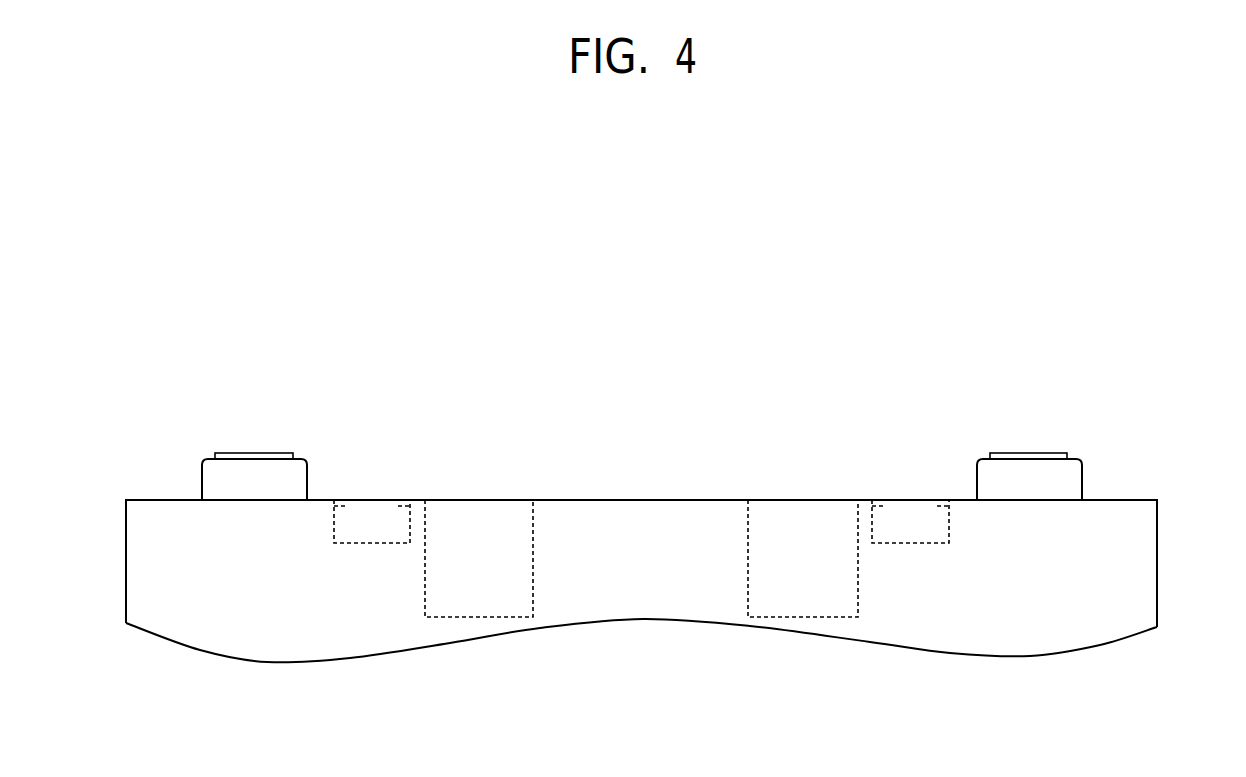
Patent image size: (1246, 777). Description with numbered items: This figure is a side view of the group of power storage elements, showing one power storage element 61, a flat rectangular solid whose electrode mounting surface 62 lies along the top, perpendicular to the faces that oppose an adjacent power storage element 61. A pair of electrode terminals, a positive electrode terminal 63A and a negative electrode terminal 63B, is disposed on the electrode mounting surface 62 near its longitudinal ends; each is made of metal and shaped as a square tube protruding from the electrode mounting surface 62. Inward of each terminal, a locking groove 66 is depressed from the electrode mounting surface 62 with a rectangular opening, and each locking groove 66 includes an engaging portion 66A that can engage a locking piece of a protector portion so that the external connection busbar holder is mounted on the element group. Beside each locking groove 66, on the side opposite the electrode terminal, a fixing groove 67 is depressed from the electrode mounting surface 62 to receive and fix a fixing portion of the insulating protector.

The power storage element 61 is at (1133, 562).
The electrode mounting surface 62 is at (684, 500).
The positive electrode terminal 63A is at (1072, 481).
The negative electrode terminal 63B is at (212, 485).
The locking groove 66 is at (335, 519).
The engaging portion 66A is at (400, 506).
The fixing groove 67 is at (533, 585).